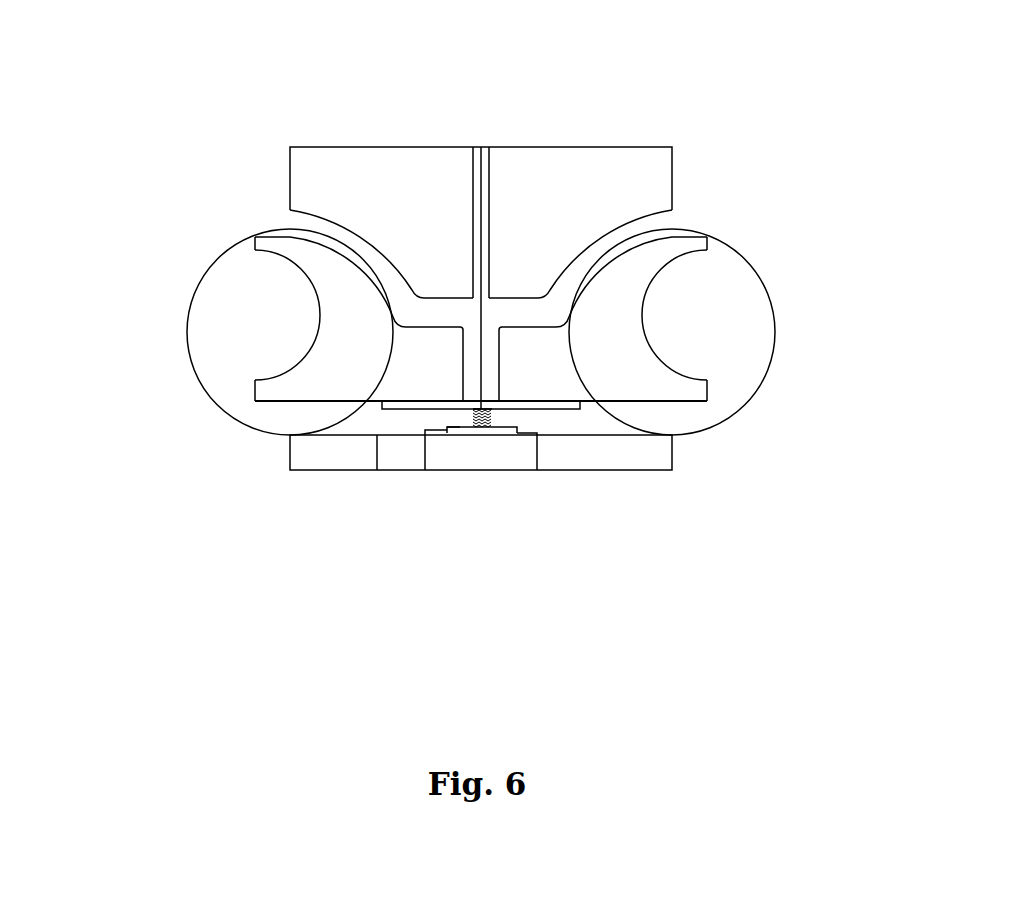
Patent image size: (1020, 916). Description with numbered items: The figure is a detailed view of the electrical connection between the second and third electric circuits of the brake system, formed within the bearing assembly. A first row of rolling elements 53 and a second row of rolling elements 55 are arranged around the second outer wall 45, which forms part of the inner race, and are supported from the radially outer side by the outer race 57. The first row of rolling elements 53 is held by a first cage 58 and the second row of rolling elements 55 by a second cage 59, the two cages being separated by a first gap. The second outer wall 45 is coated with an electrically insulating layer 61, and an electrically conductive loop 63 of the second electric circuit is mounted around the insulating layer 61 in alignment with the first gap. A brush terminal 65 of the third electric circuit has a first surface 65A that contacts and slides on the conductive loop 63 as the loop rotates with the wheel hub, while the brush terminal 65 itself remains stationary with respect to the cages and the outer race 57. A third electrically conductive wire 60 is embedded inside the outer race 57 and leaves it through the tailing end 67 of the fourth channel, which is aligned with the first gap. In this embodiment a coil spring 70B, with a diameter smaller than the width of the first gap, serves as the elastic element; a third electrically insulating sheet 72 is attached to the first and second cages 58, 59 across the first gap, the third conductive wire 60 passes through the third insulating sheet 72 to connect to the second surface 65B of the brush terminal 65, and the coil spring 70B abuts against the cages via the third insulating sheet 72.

The second outer wall 45 is at (315, 455).
The first row of rolling elements 53 is at (222, 283).
The second row of rolling elements 55 is at (740, 292).
The outer race 57 is at (325, 168).
The first cage 58 is at (328, 365).
The second cage 59 is at (632, 375).
The third electrically conductive wire 60 is at (482, 193).
The electrically insulating layer 61 is at (377, 470).
The electrically conductive loop 63 is at (473, 460).
The brush terminal 65 is at (502, 428).
The first surface 65A is at (453, 433).
The second surface 65B is at (492, 428).
The tailing end of the fourth channel 67 is at (473, 210).
The coil spring 70B is at (485, 410).
The third electrically insulating sheet 72 is at (576, 409).